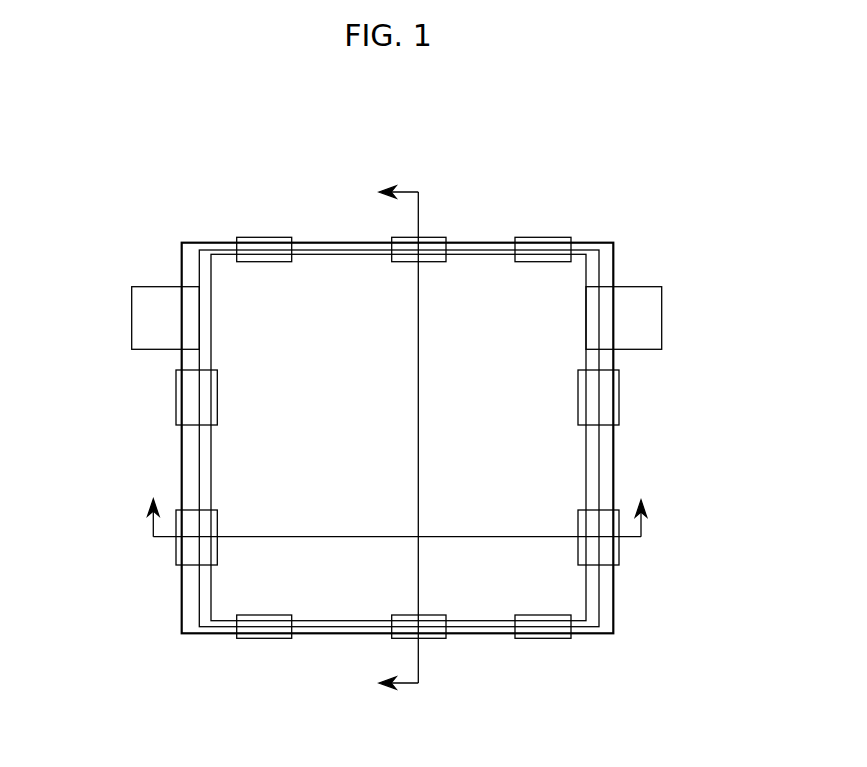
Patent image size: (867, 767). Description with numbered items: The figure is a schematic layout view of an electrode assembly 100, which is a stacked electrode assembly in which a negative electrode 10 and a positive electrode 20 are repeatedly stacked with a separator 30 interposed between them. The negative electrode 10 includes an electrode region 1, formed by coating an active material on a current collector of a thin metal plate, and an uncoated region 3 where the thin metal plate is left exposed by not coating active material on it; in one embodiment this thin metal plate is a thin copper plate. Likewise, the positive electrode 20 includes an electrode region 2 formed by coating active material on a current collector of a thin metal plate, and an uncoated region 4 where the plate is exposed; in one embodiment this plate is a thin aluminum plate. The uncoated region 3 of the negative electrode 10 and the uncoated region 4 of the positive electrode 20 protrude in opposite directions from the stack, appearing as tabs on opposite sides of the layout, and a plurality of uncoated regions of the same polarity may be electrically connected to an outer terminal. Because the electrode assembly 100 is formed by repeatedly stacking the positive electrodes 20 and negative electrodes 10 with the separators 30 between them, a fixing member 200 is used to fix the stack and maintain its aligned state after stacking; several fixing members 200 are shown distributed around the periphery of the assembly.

The electrode assembly 100 is at (388, 138).
The negative electrode 10 is at (492, 437).
The electrode region 1 is at (586, 270).
The uncoated region 3 is at (655, 318).
The positive electrode 20 is at (325, 438).
The electrode region 2 is at (199, 270).
The uncoated region 4 is at (149, 318).
The separator 30 is at (195, 635).
The fixing member 200 is at (263, 639).